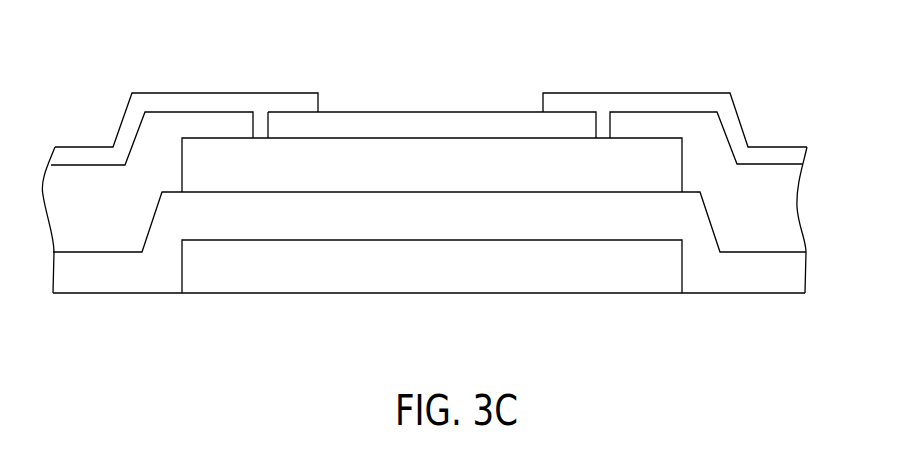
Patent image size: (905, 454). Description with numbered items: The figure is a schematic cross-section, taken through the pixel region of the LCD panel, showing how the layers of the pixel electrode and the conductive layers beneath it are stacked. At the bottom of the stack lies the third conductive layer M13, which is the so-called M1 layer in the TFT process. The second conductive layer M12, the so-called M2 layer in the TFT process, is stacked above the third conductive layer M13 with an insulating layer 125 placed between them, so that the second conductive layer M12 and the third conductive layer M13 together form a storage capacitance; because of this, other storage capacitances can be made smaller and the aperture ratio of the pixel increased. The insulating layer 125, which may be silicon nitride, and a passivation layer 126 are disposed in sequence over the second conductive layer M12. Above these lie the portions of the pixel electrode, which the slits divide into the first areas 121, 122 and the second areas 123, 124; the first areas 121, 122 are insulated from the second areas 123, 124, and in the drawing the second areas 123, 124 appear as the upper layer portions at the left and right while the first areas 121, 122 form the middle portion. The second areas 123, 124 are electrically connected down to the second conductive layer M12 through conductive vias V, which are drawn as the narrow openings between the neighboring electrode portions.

The second conductive layer M12 is at (197, 150).
The third conductive layer M13 is at (240, 273).
The first area 121 is at (383, 123).
The first area 122 is at (476, 123).
The second area 123 is at (234, 103).
The second area 124 is at (638, 105).
The insulating layer 125 is at (640, 230).
The passivation layer 126 is at (708, 125).
The conductive via V is at (258, 122).